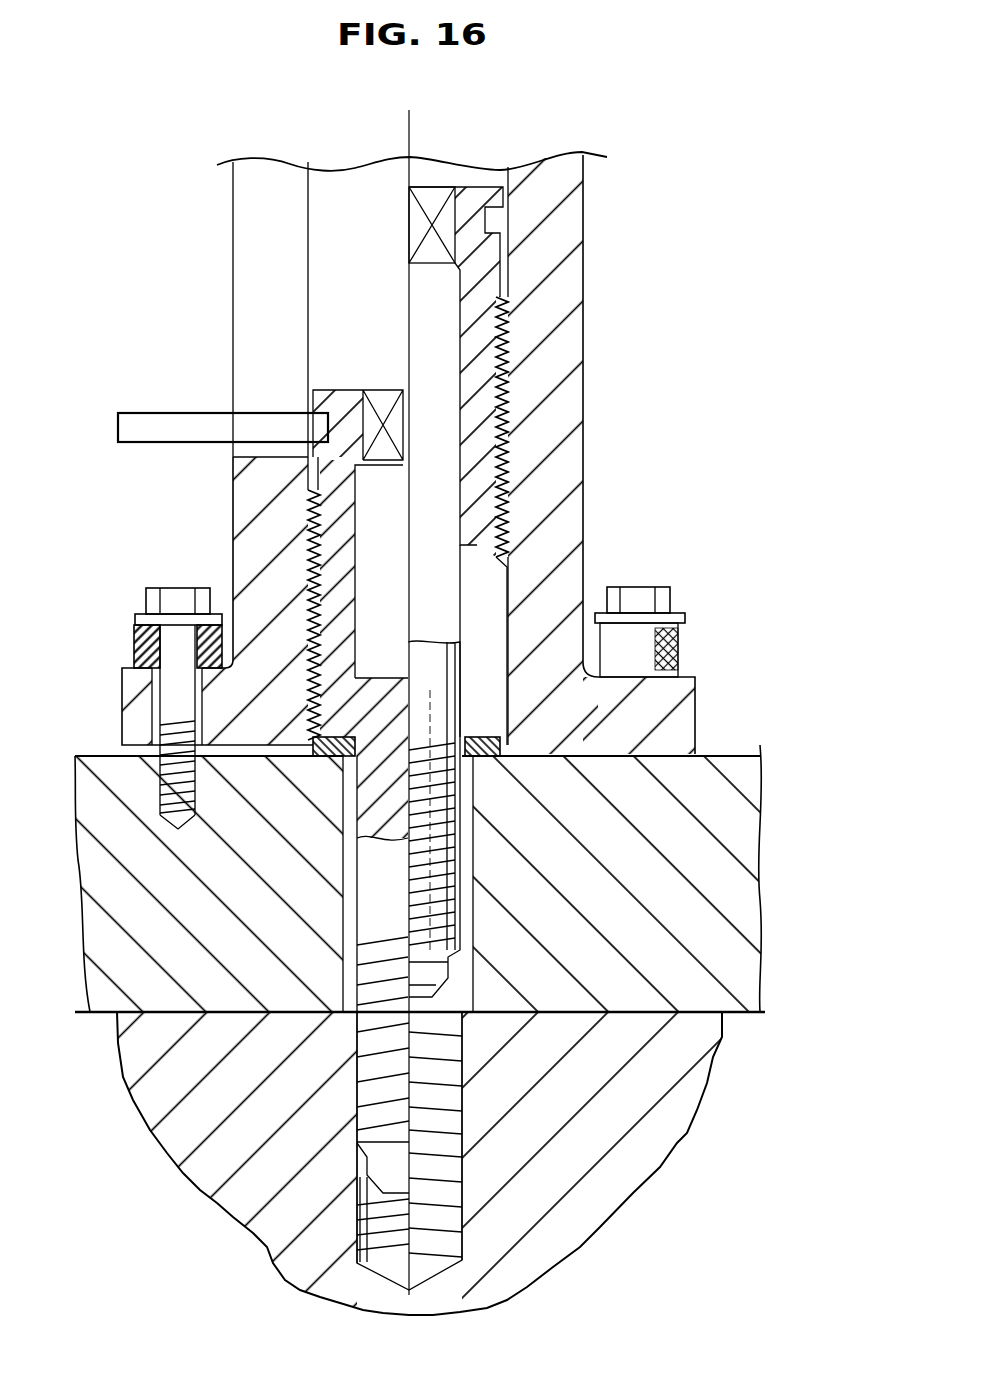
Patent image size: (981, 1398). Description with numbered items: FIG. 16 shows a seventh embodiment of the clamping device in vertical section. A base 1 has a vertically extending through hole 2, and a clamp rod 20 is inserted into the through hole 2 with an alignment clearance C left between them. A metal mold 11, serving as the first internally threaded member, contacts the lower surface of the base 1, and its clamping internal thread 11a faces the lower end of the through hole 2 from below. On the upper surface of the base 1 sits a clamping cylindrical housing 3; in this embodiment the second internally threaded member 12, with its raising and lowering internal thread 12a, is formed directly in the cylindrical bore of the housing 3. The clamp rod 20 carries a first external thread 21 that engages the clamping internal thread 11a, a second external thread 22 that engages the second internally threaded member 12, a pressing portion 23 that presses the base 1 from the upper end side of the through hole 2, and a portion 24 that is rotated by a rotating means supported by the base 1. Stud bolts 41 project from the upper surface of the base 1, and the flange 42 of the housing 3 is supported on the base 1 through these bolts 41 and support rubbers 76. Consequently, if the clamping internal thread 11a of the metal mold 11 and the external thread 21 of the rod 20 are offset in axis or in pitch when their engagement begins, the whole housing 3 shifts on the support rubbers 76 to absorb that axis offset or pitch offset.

The base 1 is at (740, 863).
The through hole 2 is at (470, 860).
The clamping cylindrical housing 3 is at (585, 397).
The metal mold 11 is at (656, 1137).
The clamping internal thread 11a is at (452, 1125).
The second internally threaded member 12 is at (518, 508).
The raising and lowering internal thread 12a is at (502, 498).
The clamp rod 20 is at (357, 915).
The first external thread 21 is at (448, 903).
The second external thread 22 is at (318, 572).
The pressing portion 23 is at (338, 735).
The rotated portion 24 is at (373, 390).
The stud bolts 41 is at (177, 590).
The flange 42 is at (698, 702).
The support rubbers 76 is at (138, 648).
The alignment clearance C is at (350, 866).